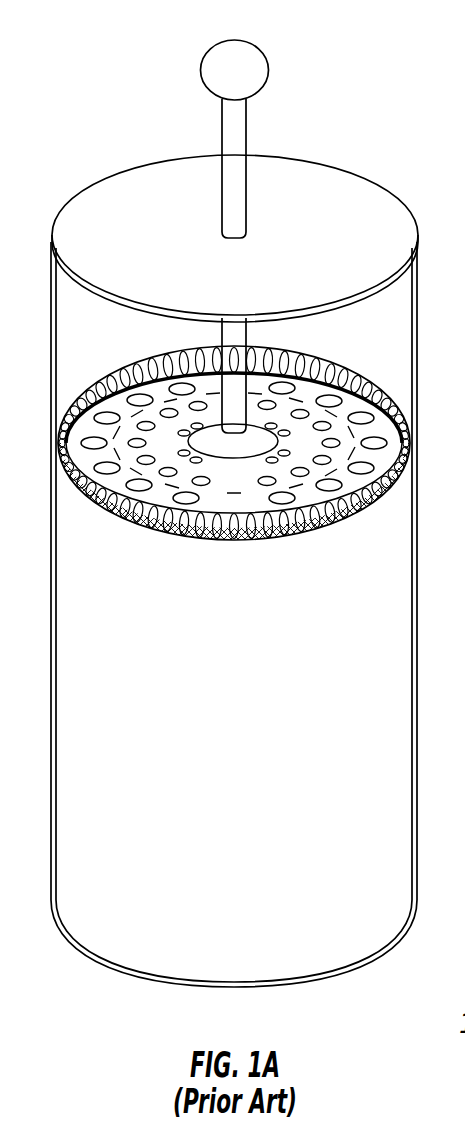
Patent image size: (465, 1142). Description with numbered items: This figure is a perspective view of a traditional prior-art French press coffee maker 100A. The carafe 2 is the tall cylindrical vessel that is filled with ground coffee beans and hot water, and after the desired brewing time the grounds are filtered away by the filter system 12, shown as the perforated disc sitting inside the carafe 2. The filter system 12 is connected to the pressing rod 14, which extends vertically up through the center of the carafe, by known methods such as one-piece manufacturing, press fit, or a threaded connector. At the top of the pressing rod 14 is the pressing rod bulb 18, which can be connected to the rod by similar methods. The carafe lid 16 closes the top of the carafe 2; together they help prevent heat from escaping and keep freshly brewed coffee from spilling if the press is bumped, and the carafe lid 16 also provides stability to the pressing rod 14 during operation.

The French press coffee maker 100A is at (234, 522).
The carafe 2 is at (52, 375).
The filter system 12 is at (385, 375).
The pressing rod 14 is at (238, 136).
The carafe lid 16 is at (323, 163).
The pressing rod bulb 18 is at (233, 41).